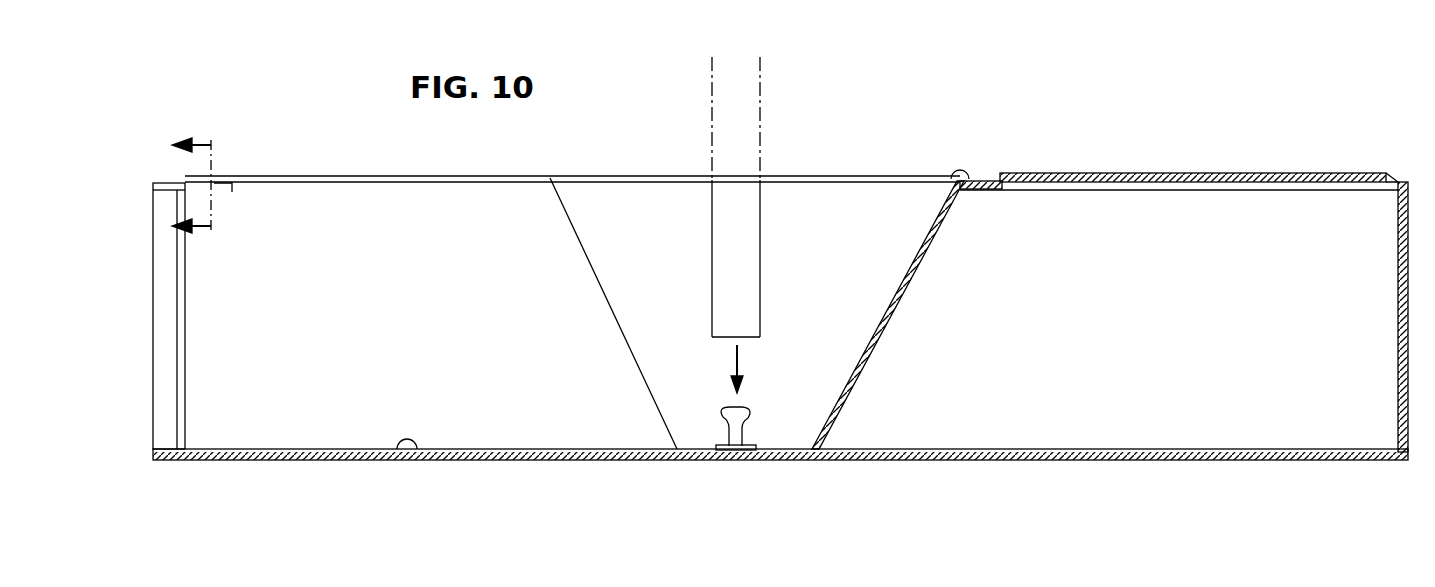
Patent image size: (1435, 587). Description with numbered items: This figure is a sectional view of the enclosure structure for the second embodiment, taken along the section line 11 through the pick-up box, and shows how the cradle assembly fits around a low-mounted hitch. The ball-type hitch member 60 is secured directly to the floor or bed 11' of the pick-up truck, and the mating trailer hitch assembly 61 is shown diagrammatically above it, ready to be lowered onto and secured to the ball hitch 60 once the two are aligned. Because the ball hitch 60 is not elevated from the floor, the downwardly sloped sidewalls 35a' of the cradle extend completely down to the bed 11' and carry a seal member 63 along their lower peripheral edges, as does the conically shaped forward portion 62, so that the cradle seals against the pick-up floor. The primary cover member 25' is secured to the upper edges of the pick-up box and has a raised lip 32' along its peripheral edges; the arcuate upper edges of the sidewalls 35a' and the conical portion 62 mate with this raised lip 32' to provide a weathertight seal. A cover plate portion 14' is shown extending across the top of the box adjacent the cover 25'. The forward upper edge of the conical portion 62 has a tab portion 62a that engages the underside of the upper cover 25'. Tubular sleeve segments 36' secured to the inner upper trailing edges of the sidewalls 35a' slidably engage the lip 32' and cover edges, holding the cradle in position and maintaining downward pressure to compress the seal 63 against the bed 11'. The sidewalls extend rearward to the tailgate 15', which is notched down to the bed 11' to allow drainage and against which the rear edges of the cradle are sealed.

The section line 11 is at (167, 188).
The floor or bed 11' is at (401, 468).
The top cover plate 14' is at (1179, 171).
The tailgate 15' is at (141, 316).
The primary cover member 25' is at (1413, 293).
The raised lip 32' is at (980, 151).
The sidewalls 35a' is at (516, 313).
The tubular sleeve segments 36' is at (249, 166).
The ball-type hitch member 60 is at (748, 422).
The trailer hitch assembly 61 is at (758, 312).
The conically shaped forward portion 62 is at (798, 200).
The tab portion 62a is at (962, 192).
The seal member 63 is at (240, 456).